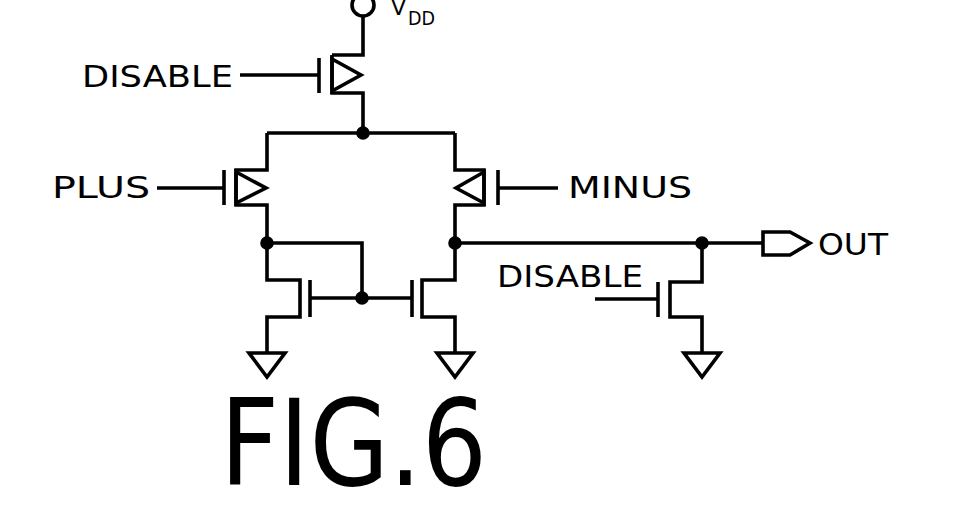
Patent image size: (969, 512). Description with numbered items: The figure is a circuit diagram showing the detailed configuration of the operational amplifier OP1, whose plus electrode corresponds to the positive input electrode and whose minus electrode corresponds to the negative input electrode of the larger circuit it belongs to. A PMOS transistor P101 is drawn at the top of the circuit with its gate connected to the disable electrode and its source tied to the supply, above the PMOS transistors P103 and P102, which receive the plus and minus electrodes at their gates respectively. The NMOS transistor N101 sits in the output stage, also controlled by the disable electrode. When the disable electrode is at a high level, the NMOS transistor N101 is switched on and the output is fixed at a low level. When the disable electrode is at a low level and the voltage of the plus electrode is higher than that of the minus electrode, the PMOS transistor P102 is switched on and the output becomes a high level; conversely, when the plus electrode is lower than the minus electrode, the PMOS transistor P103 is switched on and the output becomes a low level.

The disable P-channel transistor P101 is at (370, 79).
The PMOS transistor P102 is at (470, 160).
The PMOS transistor P103 is at (252, 163).
The NMOS transistor N101 is at (690, 301).
The operational amplifier OP1 is at (332, 242).